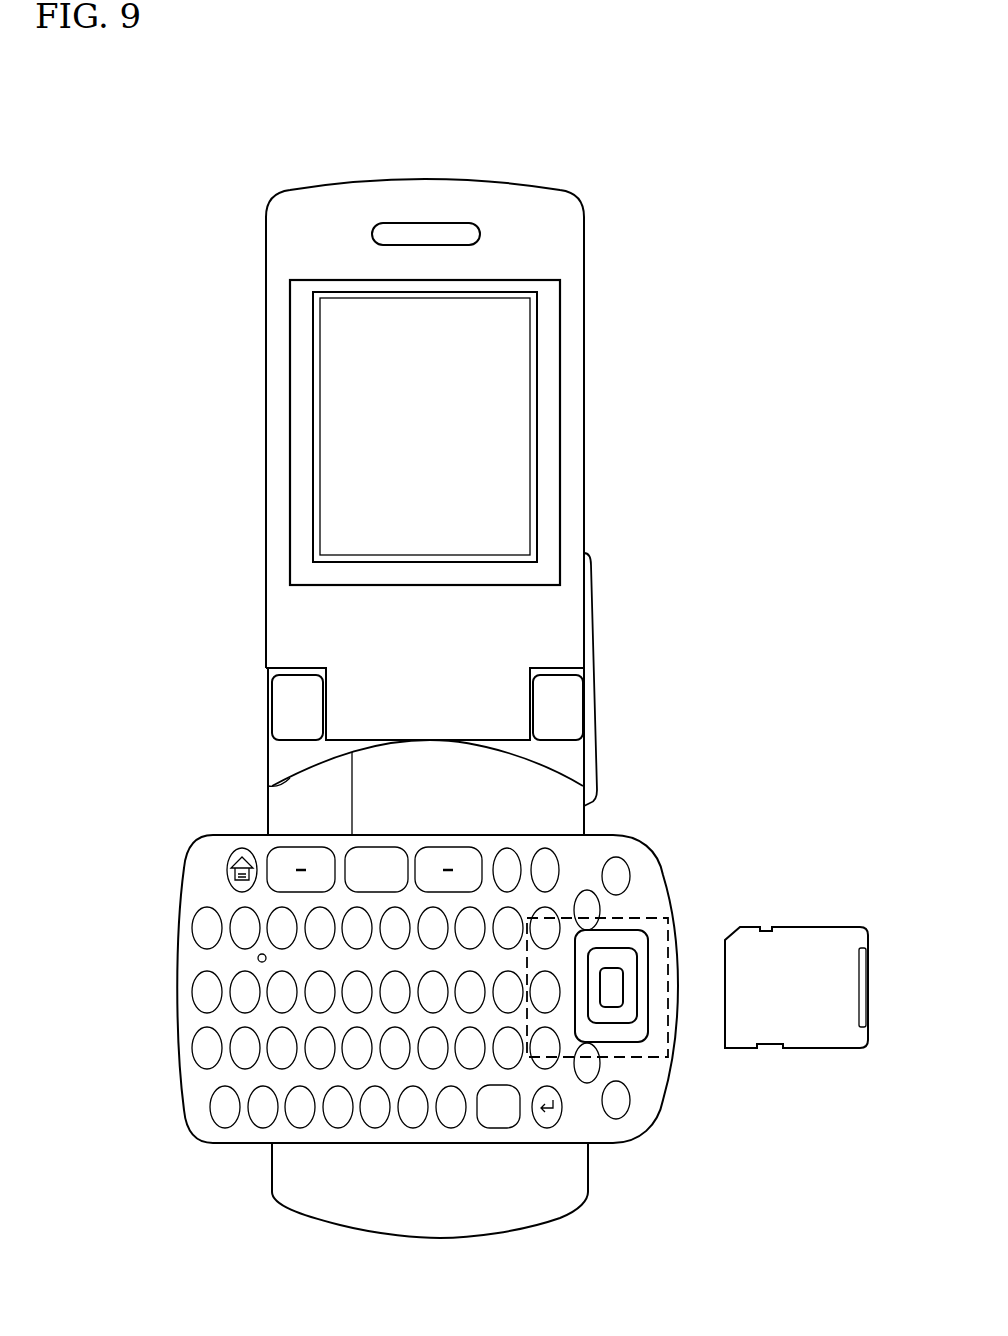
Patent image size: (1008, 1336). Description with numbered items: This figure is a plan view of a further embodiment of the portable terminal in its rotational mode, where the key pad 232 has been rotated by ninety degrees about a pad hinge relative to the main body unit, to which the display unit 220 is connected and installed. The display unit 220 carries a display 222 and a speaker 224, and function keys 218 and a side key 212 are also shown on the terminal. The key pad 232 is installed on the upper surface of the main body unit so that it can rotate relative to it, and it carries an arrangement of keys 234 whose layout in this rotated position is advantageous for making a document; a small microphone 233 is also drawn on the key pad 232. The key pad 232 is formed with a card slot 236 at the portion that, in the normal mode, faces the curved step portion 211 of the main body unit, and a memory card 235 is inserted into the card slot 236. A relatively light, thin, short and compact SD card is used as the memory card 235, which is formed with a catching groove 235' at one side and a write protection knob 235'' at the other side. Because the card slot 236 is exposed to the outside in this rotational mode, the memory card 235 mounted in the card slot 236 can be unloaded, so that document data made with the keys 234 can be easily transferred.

The display unit 220 is at (533, 215).
The speaker 224 is at (423, 232).
The display 222 is at (513, 410).
The side key 212 is at (596, 608).
The function keys 218 is at (362, 730).
The curved step portion 211 is at (297, 778).
The key pad 232 is at (178, 1022).
The microphone 233 is at (258, 958).
The keys 234 is at (213, 1107).
The card slot 236 is at (640, 913).
The memory card 235 is at (799, 954).
The catching groove 235' is at (767, 896).
The write protection knob 235'' is at (763, 1081).